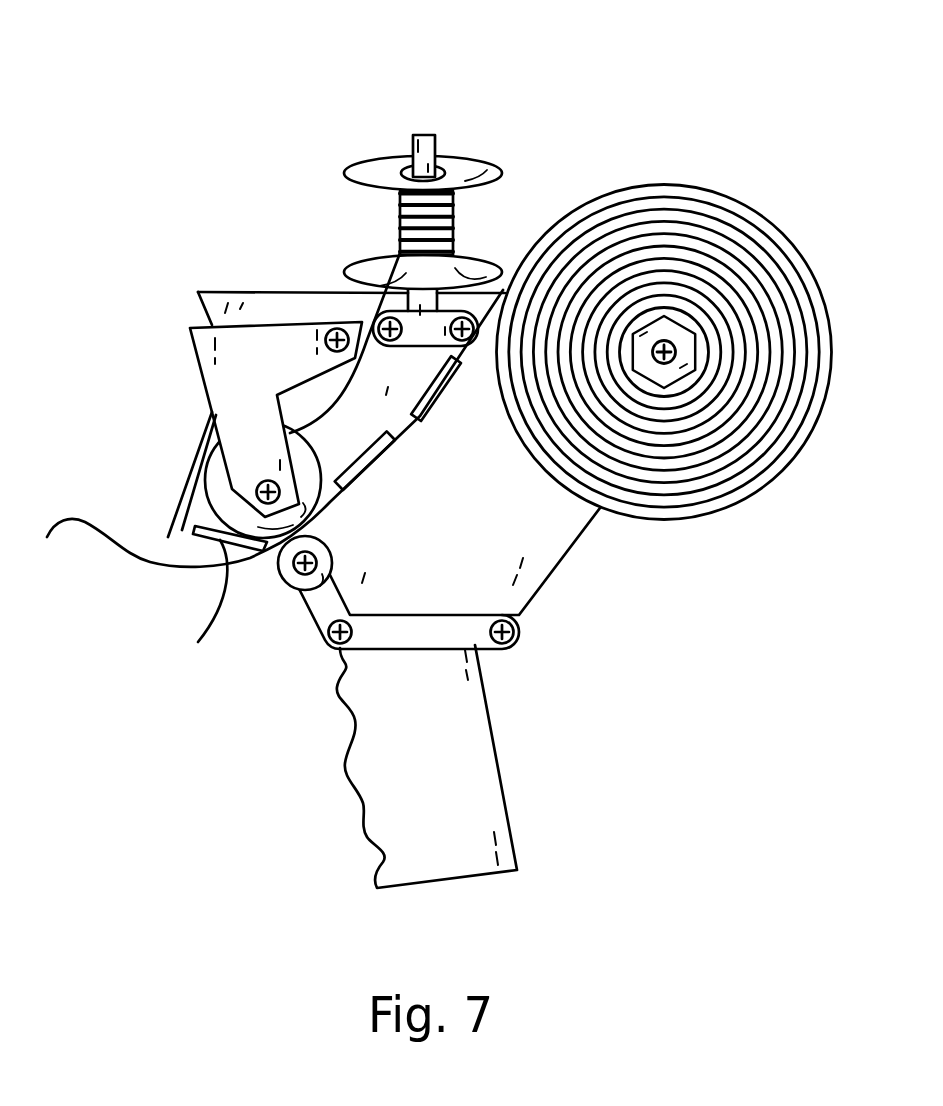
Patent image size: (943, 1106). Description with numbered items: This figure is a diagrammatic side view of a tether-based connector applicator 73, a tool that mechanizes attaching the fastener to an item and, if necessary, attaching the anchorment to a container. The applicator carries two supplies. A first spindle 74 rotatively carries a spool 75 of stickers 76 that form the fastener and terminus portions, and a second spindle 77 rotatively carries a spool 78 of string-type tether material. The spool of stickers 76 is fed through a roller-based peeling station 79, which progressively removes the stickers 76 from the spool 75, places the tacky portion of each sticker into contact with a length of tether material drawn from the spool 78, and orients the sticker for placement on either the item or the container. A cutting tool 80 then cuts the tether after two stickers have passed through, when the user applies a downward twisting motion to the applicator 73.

The tether-based connector applicator 73 is at (228, 90).
The first spindle 74 is at (677, 332).
The spool of stickers 75 is at (763, 492).
The stickers 76 is at (456, 360).
The second spindle 77 is at (425, 135).
The spool of string type tether material 78 is at (470, 168).
The roller-based peeling station 79 is at (267, 535).
The cutting tool 80 is at (180, 497).